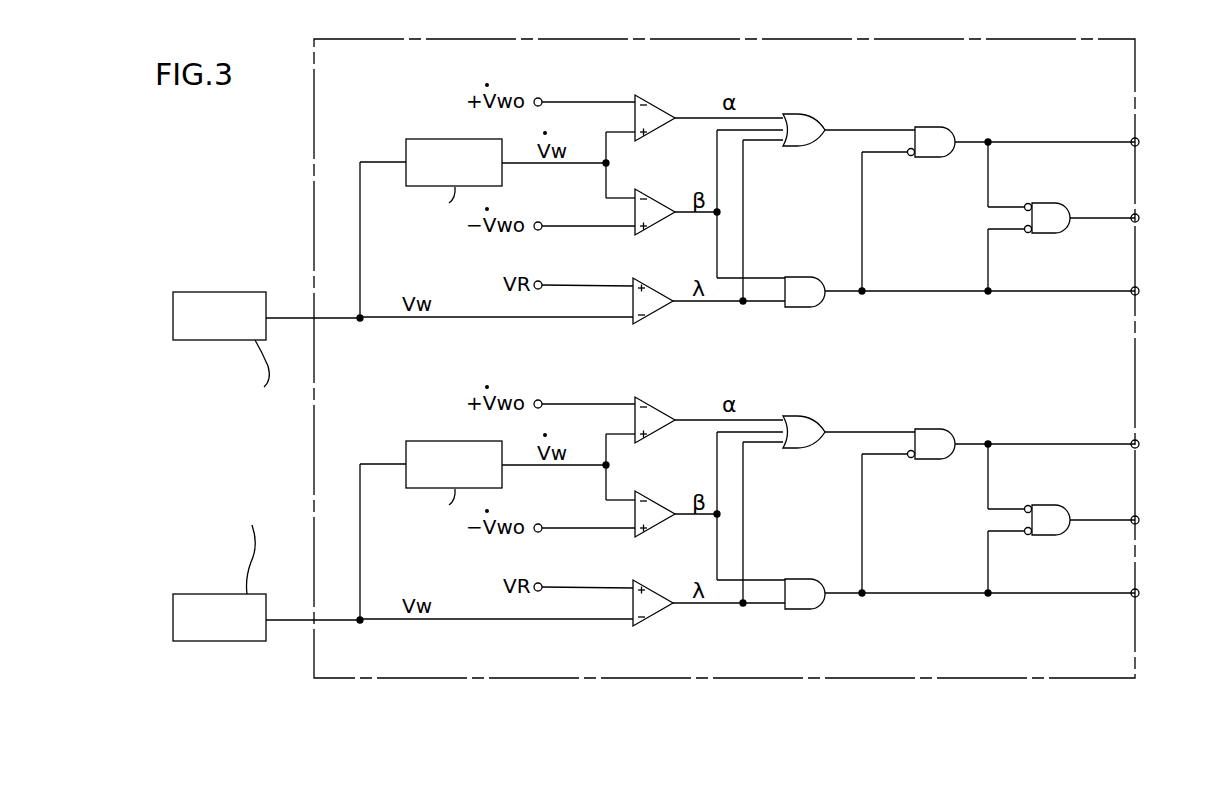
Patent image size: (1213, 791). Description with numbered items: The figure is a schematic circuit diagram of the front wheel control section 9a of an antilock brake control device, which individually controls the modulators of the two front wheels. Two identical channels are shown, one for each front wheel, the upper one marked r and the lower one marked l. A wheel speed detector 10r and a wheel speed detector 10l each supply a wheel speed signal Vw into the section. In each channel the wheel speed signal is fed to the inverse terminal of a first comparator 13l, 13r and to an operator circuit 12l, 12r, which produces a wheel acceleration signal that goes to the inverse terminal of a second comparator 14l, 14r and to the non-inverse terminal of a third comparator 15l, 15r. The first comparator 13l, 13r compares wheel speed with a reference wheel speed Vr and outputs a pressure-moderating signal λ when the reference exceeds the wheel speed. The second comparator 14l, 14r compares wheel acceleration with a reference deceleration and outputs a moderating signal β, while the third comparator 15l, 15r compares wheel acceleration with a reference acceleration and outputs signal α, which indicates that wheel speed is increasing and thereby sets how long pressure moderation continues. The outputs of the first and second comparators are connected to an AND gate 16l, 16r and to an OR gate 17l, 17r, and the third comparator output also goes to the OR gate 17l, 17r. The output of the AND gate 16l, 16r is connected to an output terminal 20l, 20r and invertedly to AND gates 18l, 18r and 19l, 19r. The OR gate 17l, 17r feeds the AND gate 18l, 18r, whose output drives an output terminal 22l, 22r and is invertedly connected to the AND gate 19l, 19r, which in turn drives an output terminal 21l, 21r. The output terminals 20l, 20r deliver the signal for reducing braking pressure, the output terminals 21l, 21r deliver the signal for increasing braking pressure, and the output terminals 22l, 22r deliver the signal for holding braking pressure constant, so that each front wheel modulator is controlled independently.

The front wheel control section 9a is at (503, 38).
The detector 10r is at (208, 300).
The detector 10l is at (205, 600).
The operator circuit 12r is at (422, 147).
The operator circuit 12l is at (422, 449).
The first comparator 13r is at (650, 286).
The first comparator 13l is at (650, 588).
The second comparator 14r is at (655, 200).
The second comparator 14l is at (655, 502).
The third comparator 15r is at (653, 106).
The third comparator 15l is at (653, 408).
The AND gate 16r is at (797, 277).
The AND gate 16l is at (797, 579).
The OR gate 17r is at (795, 114).
The OR gate 17l is at (795, 416).
The AND gate 18r is at (928, 127).
The AND gate 18l is at (928, 429).
The AND gate 19r is at (1048, 204).
The AND gate 19l is at (1048, 506).
The output terminal 20r is at (1139, 291).
The output terminal 20l is at (1139, 593).
The output terminal 21r is at (1139, 218).
The output terminal 21l is at (1139, 520).
The output terminal 22r is at (1139, 142).
The output terminal 22l is at (1139, 444).